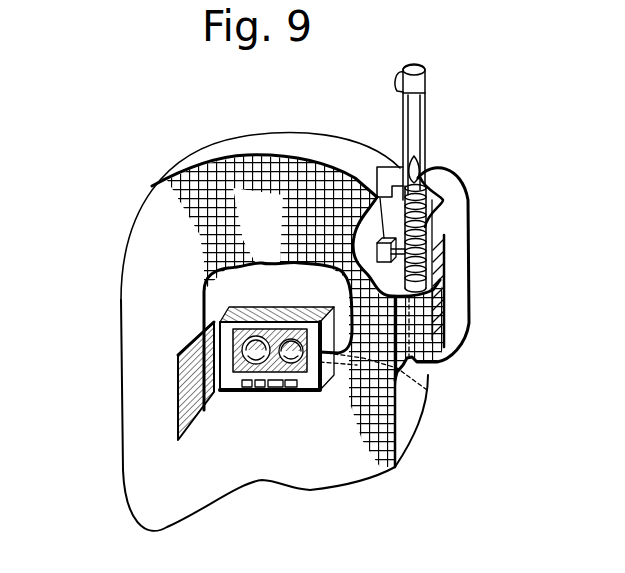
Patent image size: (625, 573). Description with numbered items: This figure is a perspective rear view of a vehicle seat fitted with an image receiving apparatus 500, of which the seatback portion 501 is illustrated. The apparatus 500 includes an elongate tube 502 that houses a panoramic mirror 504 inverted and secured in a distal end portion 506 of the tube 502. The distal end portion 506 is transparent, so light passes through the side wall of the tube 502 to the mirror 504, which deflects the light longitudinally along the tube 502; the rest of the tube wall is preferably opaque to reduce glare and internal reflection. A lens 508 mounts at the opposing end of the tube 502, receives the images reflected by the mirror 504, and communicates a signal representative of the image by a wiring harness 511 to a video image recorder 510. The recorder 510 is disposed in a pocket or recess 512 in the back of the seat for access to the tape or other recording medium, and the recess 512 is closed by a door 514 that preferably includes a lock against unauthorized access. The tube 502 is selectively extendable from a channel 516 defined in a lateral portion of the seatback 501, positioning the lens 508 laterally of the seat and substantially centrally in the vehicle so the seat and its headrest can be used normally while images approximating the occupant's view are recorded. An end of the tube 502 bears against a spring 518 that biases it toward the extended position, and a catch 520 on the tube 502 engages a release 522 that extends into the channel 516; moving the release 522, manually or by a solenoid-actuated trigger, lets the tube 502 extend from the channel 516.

The image receiving apparatus 500 is at (188, 142).
The seatback portion 501 is at (153, 253).
The elongate tube 502 is at (416, 137).
The panoramic mirror 504 is at (414, 82).
The distal end portion 506 is at (396, 76).
The lens 508 is at (422, 167).
The video image recorder 510 is at (262, 357).
The wiring harness 511 is at (396, 350).
The recess 512 is at (261, 266).
The door 514 is at (190, 405).
The channel 516 is at (434, 222).
The spring 518 is at (433, 260).
The catch 520 is at (401, 167).
The release 522 is at (394, 166).